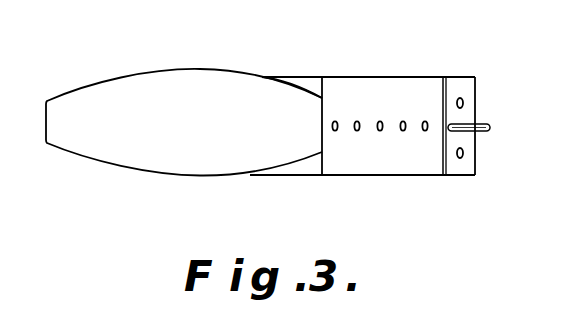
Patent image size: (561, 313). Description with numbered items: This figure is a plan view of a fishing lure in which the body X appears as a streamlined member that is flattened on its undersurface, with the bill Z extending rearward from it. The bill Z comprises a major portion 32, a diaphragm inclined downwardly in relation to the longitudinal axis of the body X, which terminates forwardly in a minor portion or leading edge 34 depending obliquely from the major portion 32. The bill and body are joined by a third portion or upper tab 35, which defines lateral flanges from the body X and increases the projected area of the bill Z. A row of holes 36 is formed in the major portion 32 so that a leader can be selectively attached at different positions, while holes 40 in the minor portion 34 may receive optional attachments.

The body X is at (203, 132).
The bill Z is at (387, 78).
The major portion 32 is at (364, 106).
The minor portion 34 is at (465, 88).
The upper tab 35 is at (307, 85).
The holes 36 is at (433, 134).
The holes 40 is at (467, 152).